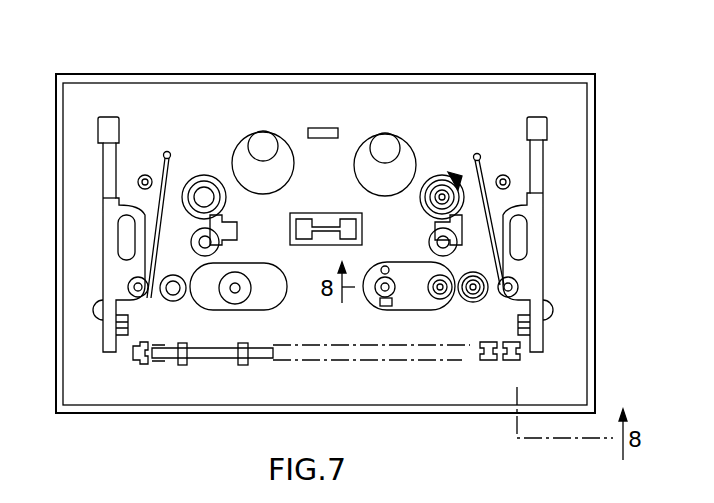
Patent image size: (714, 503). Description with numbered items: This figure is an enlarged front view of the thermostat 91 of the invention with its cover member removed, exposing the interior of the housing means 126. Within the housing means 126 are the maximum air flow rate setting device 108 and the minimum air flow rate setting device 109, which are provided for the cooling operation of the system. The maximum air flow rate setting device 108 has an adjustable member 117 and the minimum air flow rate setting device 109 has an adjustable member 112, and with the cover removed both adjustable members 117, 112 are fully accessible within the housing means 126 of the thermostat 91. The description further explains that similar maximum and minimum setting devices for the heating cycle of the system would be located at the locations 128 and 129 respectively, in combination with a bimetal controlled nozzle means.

The housing means 126 is at (252, 74).
The thermostat 91 is at (483, 62).
The location 128 is at (202, 175).
The adjustable member 117 is at (440, 175).
The maximum air flow rate setting device 108 is at (455, 172).
The location 129 is at (184, 298).
The adjustable member 112 is at (462, 305).
The minimum air flow rate setting device 109 is at (473, 303).